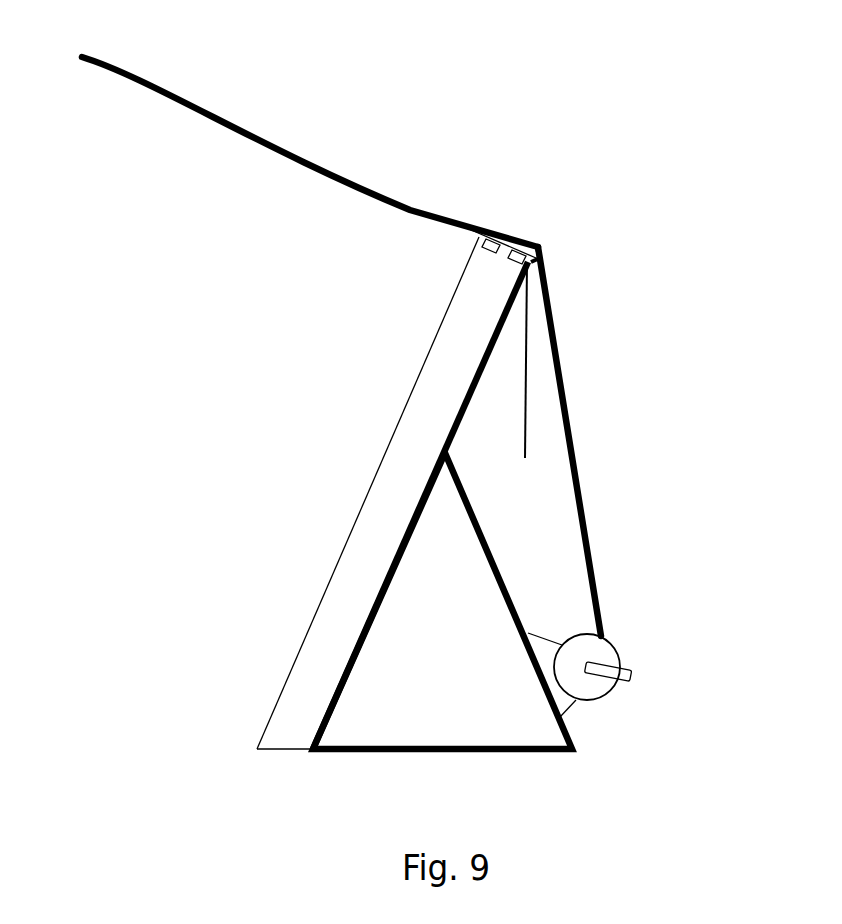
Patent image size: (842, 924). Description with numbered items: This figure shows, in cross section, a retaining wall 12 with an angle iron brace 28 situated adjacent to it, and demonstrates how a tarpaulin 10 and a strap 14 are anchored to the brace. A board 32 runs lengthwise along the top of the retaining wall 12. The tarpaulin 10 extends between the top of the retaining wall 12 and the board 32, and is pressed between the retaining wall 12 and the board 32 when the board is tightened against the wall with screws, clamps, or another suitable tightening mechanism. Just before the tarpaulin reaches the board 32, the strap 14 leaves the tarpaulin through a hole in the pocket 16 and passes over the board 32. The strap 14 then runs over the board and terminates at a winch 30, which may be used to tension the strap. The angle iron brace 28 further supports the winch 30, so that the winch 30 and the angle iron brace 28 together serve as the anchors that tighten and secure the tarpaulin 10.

The tarpaulin 10 is at (225, 103).
The retaining wall 12 is at (437, 308).
The strap 14 is at (462, 220).
The pocket 16 is at (417, 202).
The angle iron brace 28 is at (483, 563).
The winch 30 is at (630, 645).
The board 32 is at (525, 240).